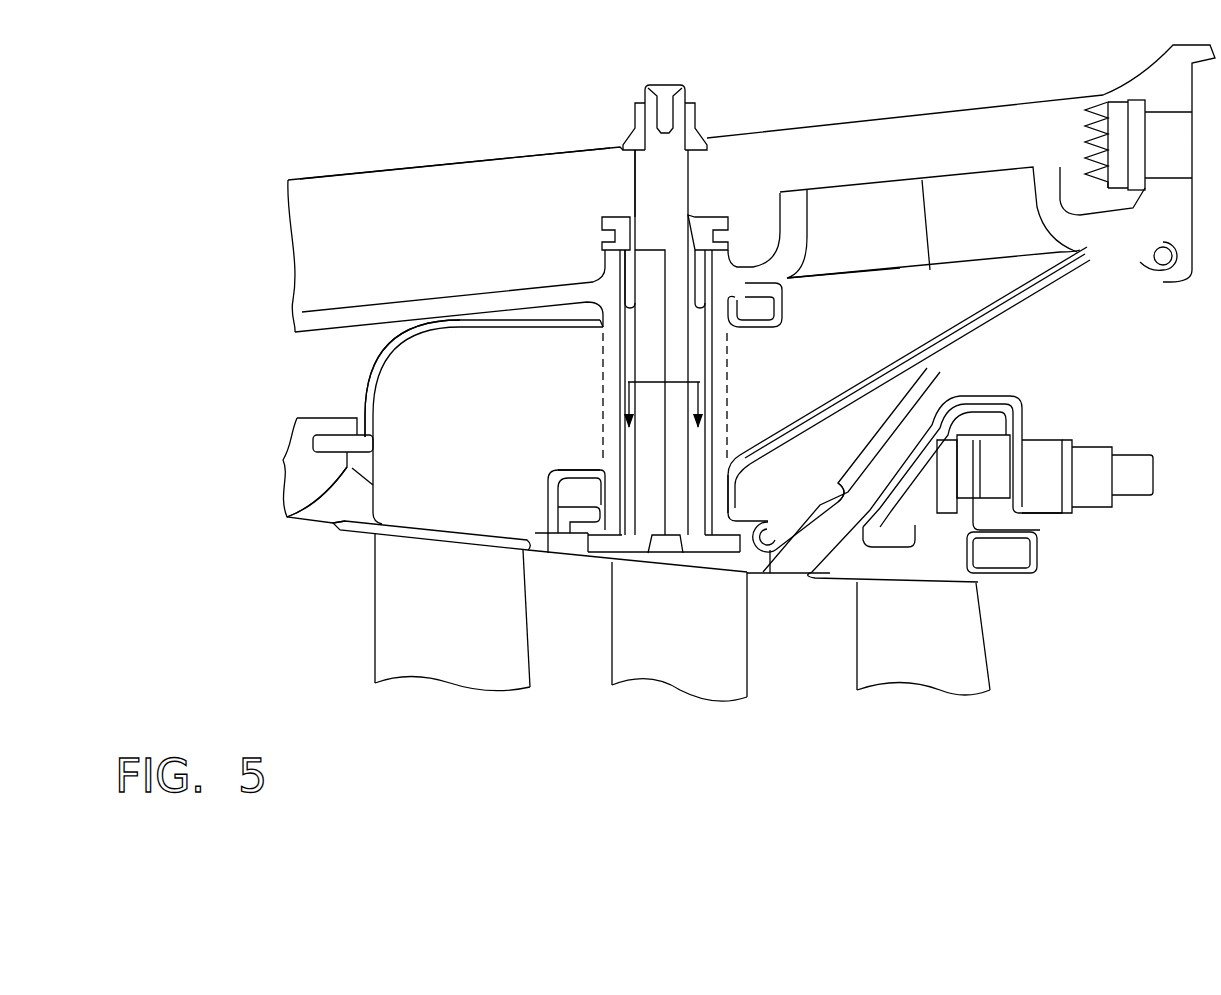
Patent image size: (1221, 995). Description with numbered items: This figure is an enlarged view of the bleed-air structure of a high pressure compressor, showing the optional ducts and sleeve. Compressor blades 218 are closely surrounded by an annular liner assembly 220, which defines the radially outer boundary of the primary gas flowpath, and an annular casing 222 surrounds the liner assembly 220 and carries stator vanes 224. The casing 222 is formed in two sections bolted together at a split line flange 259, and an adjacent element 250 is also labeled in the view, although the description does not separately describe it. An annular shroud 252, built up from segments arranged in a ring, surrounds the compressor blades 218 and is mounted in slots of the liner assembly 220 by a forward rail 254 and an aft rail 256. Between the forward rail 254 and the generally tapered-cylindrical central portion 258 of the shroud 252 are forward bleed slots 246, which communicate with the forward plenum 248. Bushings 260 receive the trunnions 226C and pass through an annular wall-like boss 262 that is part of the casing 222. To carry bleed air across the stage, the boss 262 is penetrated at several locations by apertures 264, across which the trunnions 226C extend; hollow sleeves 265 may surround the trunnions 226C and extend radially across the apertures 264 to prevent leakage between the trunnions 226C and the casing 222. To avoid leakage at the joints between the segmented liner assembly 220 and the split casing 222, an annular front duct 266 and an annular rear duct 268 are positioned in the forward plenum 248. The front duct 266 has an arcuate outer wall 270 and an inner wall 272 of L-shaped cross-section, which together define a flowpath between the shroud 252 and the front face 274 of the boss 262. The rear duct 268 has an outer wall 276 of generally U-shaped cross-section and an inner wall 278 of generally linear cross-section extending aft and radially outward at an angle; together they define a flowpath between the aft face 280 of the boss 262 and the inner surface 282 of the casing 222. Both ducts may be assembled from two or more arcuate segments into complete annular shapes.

The compressor blades 218 is at (415, 609).
The liner assembly 220 is at (285, 477).
The casing 222 is at (418, 240).
The stator vanes 224 is at (652, 632).
The trunnions 226C is at (650, 110).
The forward bleed slots 246 is at (333, 493).
The forward plenum 248 is at (846, 348).
The flange 250 is at (1033, 197).
The shroud 252 is at (343, 543).
The forward rail 254 is at (338, 442).
The aft rail 256 is at (580, 512).
The central portion 258 is at (457, 530).
The split line flange 259 is at (463, 178).
The bushings 260 is at (627, 220).
The boss 262 is at (730, 520).
The apertures 264 is at (725, 377).
The sleeves 265 is at (627, 380).
The front duct 266 is at (477, 350).
The rear duct 268 is at (987, 300).
The outer wall 270 is at (387, 377).
The inner wall 272 is at (560, 465).
The front face 274 is at (600, 323).
The outer wall 276 is at (783, 306).
The inner wall 278 is at (873, 385).
The aft face 280 is at (740, 487).
The inner surface 282 is at (1113, 245).